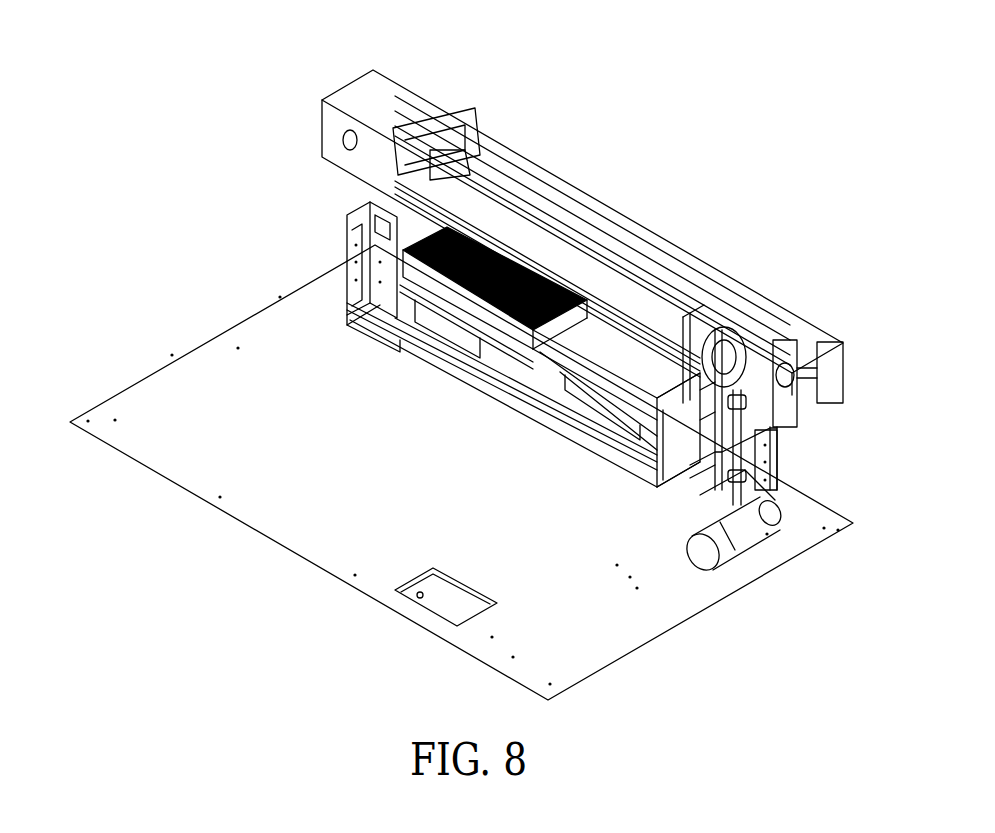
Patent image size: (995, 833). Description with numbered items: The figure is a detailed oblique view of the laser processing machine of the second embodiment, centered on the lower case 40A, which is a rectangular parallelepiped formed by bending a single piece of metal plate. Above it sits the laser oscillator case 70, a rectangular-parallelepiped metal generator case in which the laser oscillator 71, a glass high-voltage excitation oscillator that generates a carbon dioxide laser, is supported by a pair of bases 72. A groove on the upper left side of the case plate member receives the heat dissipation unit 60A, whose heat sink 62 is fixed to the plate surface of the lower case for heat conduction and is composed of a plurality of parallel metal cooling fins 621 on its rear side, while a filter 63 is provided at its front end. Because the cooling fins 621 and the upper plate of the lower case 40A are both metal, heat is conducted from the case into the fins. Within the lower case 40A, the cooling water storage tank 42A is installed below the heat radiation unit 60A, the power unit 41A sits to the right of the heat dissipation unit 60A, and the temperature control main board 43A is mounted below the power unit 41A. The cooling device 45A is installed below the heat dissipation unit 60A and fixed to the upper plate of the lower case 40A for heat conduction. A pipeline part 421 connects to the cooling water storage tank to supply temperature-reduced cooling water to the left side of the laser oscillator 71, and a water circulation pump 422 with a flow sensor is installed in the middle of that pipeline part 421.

The lower case 40A is at (343, 290).
The power unit 41A is at (600, 387).
The cooling water storage tank 42A is at (500, 373).
The temperature control main board 43A is at (657, 472).
The cooling device 45A is at (384, 307).
The heat dissipation unit 60A is at (348, 233).
The heat sink 62 is at (500, 247).
The cooling fin 621 is at (533, 287).
The filter 63 is at (453, 336).
The laser oscillator case 70 is at (718, 248).
The laser oscillator 71 is at (600, 260).
The base 72 is at (480, 150).
The pipeline part 421 is at (690, 330).
The water circulation pump 422 is at (705, 563).